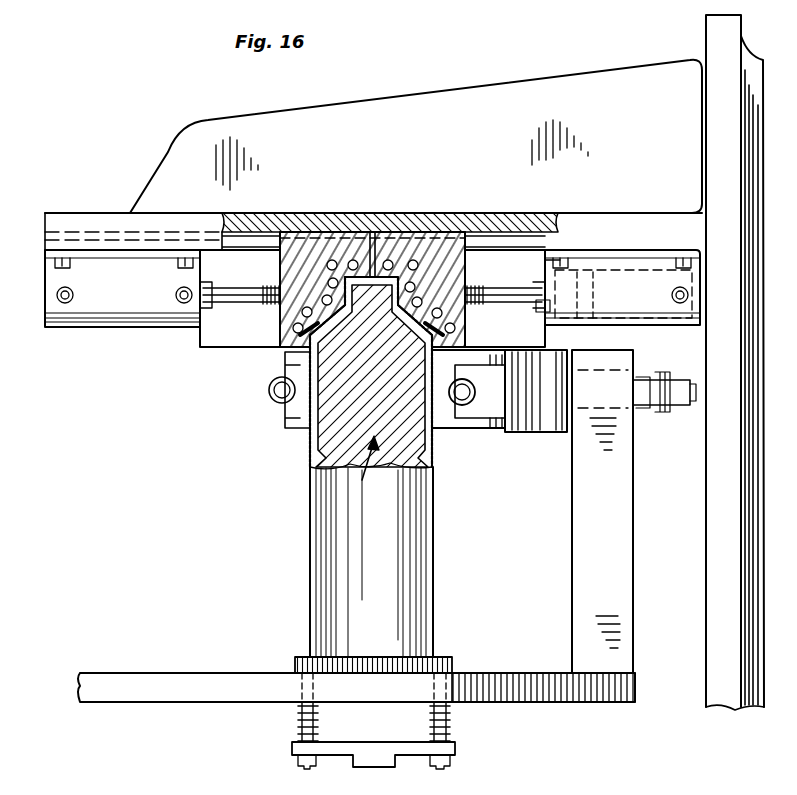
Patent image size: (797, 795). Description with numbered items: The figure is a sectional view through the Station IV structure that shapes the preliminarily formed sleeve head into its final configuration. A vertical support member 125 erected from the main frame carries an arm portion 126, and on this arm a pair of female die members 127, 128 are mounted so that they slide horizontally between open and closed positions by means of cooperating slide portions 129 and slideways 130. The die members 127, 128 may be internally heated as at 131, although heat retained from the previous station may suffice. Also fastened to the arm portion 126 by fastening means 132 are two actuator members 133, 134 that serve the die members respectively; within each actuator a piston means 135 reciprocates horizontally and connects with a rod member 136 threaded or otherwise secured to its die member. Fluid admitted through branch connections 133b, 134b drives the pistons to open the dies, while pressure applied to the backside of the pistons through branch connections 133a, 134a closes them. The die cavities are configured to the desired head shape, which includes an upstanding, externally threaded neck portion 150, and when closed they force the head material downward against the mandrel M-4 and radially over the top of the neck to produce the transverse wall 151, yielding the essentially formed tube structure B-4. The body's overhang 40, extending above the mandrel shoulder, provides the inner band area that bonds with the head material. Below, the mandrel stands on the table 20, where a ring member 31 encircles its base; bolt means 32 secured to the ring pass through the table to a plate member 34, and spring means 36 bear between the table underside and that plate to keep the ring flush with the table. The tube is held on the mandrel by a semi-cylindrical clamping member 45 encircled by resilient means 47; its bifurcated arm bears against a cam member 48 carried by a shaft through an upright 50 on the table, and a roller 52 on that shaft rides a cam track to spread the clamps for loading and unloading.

The vertical support member 125 is at (708, 362).
The arm portion 126 is at (686, 198).
The slideways 130 is at (240, 243).
The slide portions 129 is at (298, 238).
The transverse wall 151 is at (374, 266).
The internal heating means 131 is at (414, 262).
The female die member 127 is at (284, 326).
The female die member 128 is at (468, 335).
The extension or overhang 40 is at (305, 334).
The neck portion 150 is at (380, 338).
The mandrel M-4 is at (364, 477).
The rod member 136 is at (488, 294).
The actuator member 133 is at (132, 318).
The branch connection 133a is at (65, 305).
The branch connection 133b is at (184, 305).
The actuator member 134 is at (622, 264).
The fastening means 132 is at (598, 238).
The piston means 135 is at (590, 300).
The branch connection 134a is at (678, 305).
The branch connection 134b is at (538, 308).
The semi-cylindrical clamping member 45 is at (444, 422).
The resilient means 47 is at (470, 395).
The cam member 48 is at (545, 430).
The upright 50 is at (575, 504).
The roller 52 is at (690, 410).
The tube structure B-4 is at (432, 598).
The ring member 31 is at (300, 656).
The table 20 is at (512, 675).
The bolt means 32 is at (296, 718).
The spring means 36 is at (452, 722).
The plate member 34 is at (402, 754).